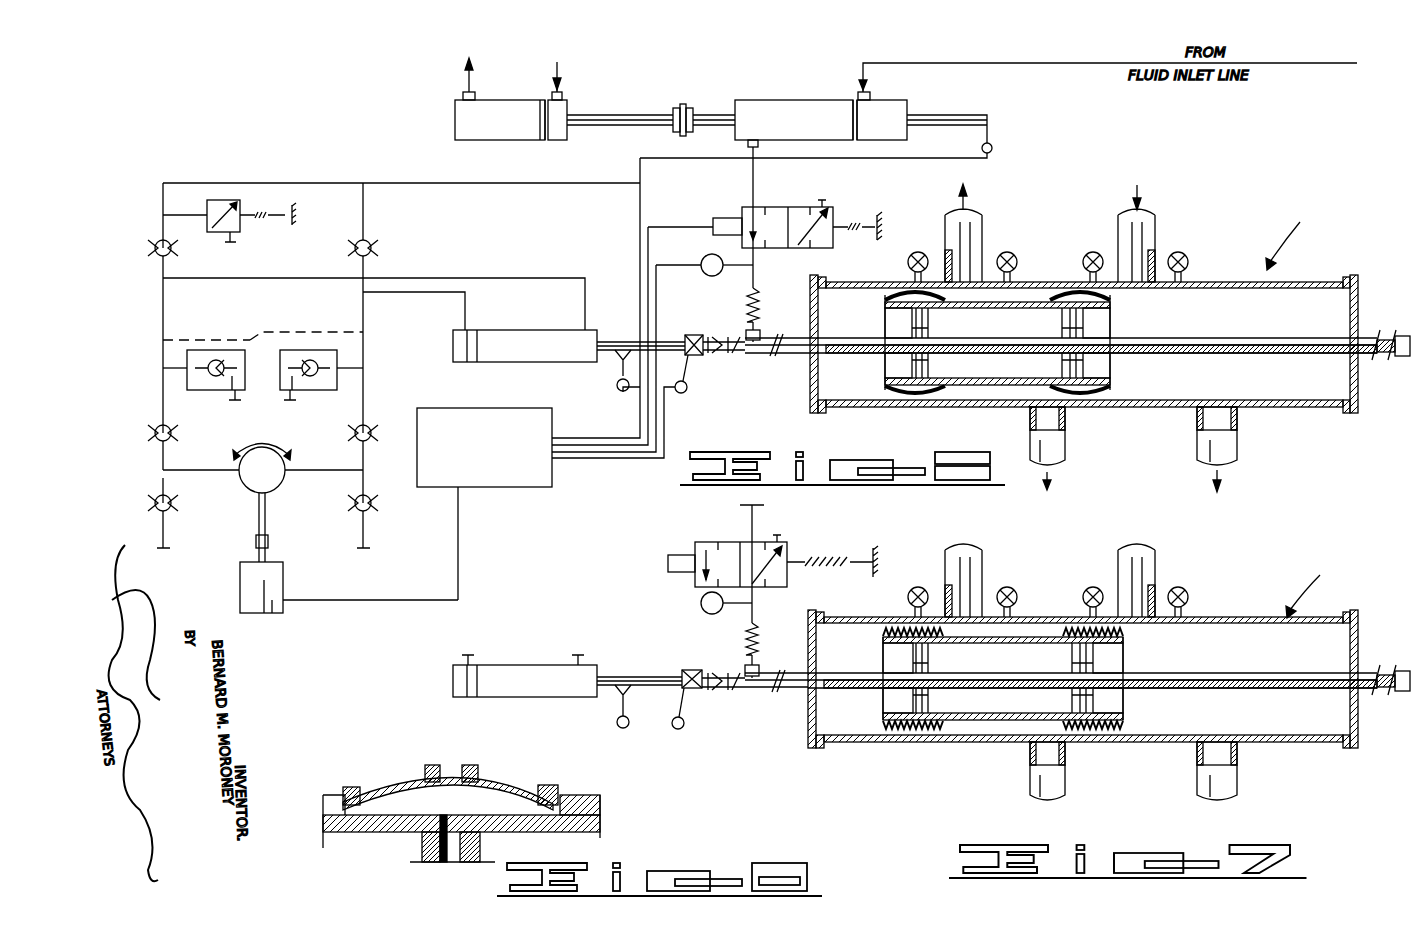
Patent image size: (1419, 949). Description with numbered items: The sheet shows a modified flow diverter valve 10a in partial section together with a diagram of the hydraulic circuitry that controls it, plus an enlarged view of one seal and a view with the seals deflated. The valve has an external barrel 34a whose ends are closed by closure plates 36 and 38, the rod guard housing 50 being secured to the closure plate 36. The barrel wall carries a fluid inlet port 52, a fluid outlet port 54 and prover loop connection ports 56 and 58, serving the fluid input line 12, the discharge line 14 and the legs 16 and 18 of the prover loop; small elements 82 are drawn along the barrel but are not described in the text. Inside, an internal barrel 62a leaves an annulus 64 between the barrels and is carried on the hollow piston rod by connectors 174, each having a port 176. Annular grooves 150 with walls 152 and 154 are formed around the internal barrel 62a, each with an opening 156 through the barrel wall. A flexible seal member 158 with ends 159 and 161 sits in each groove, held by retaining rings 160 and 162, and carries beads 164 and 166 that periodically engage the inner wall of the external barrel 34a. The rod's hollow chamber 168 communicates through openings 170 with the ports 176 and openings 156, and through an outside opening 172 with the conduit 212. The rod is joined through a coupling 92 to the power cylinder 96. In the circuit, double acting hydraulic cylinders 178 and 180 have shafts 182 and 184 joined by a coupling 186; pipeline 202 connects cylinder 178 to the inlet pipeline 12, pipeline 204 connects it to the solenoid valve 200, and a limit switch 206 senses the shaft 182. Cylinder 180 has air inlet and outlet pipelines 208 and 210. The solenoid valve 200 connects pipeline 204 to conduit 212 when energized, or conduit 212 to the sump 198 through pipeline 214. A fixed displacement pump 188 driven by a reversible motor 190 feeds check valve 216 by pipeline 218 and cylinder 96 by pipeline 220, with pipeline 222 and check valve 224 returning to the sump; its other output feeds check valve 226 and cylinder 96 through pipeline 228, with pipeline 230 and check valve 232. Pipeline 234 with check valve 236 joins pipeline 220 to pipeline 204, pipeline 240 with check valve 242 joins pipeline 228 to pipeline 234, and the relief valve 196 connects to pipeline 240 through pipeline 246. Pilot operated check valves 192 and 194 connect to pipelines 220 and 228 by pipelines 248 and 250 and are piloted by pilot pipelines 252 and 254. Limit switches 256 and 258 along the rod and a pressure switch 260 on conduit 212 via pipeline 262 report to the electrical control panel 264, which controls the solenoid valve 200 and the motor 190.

In FIG. 5, the modified diverter valve 10a is at (1299, 239).
In FIG. 7, the modified diverter valve 10a is at (1324, 587).
In FIG. 5, the fluid inlet pipeline 12 is at (1065, 448).
In FIG. 7, the fluid inlet pipeline 12 is at (1067, 782).
In FIG. 5, the fluid discharge line 14 is at (1237, 448).
In FIG. 7, the fluid discharge line 14 is at (1235, 782).
In FIG. 5, the prover loop leg 16 is at (982, 228).
In FIG. 7, the prover loop leg 16 is at (982, 576).
In FIG. 5, the prover loop leg 18 is at (1118, 232).
In FIG. 7, the prover loop leg 18 is at (1118, 580).
In FIG. 5, the modified external barrel 34a is at (1205, 282).
In FIG. 7, the modified external barrel 34a is at (1083, 663).
In FIG. 5, the closure plate 36 is at (1358, 385).
In FIG. 7, the closure plate 36 is at (1368, 679).
In FIG. 5, the closure plate 38 is at (810, 398).
In FIG. 7, the closure plate 38 is at (797, 681).
In FIG. 5, the rod guard housing 50 is at (1400, 336).
In FIG. 7, the rod guard housing 50 is at (1391, 663).
In FIG. 5, the fluid inlet port 52 is at (1065, 418).
In FIG. 7, the fluid inlet port 52 is at (1027, 753).
In FIG. 5, the fluid outlet port 54 is at (1237, 418).
In FIG. 7, the fluid outlet port 54 is at (1198, 753).
In FIG. 5, the prover loop connection port 56 is at (1155, 250).
In FIG. 7, the prover loop connection port 56 is at (1168, 586).
In FIG. 5, the prover loop connection port 58 is at (946, 250).
In FIG. 7, the prover loop connection port 58 is at (928, 589).
In FIG. 5, the modified internal barrel 62a is at (1013, 364).
In FIG. 6, the modified internal barrel 62a is at (593, 832).
In FIG. 5, the annulus 64 is at (1008, 407).
In FIG. 5, the valve 82 is at (907, 264).
In FIG. 7, the valve 82 is at (1042, 589).
In FIG. 5, the coupling 92 is at (690, 356).
In FIG. 7, the coupling 92 is at (694, 670).
In FIG. 5, the power cylinder 96 is at (525, 362).
In FIG. 7, the power cylinder 96 is at (548, 697).
In FIG. 5, the annular groove 150 is at (892, 325).
In FIG. 6, the annular groove 150 is at (482, 822).
In FIG. 6, the groove wall 152 is at (323, 802).
In FIG. 6, the groove wall 154 is at (600, 798).
In FIG. 6, the opening 156 is at (422, 850).
In FIG. 5, the seal member 158 is at (1105, 390).
In FIG. 7, the seal member 158 is at (1026, 677).
In FIG. 6, the seal member 158 is at (405, 775).
In FIG. 6, the seal member end 159 is at (323, 822).
In FIG. 6, the retaining ring 160 is at (348, 785).
In FIG. 6, the seal member end 161 is at (602, 815).
In FIG. 6, the retaining ring 162 is at (548, 785).
In FIG. 6, the annular bead 164 is at (433, 765).
In FIG. 6, the annular bead 166 is at (472, 765).
In FIG. 5, the hollow chamber 168 is at (800, 356).
In FIG. 7, the hollow chamber 168 is at (826, 688).
In FIG. 5, the opening 170 is at (920, 353).
In FIG. 7, the opening 170 is at (1007, 683).
In FIG. 5, the additional opening 172 is at (760, 334).
In FIG. 7, the additional opening 172 is at (757, 670).
In FIG. 5, the connector 174 is at (936, 353).
In FIG. 7, the connector 174 is at (1000, 678).
In FIG. 6, the connector 174 is at (415, 862).
In FIG. 5, the port 176 is at (924, 320).
In FIG. 7, the port 176 is at (1003, 675).
In FIG. 6, the port 176 is at (445, 862).
In FIG. 5, the double acting hydraulic cylinder 178 is at (795, 100).
In FIG. 5, the double acting hydraulic cylinder 180 is at (520, 100).
In FIG. 5, the shaft 182 is at (714, 112).
In FIG. 5, the shaft 184 is at (620, 113).
In FIG. 5, the coupling 186 is at (677, 106).
In FIG. 5, the fixed displacement pump 188 is at (272, 486).
In FIG. 5, the reversible motor 190 is at (280, 576).
In FIG. 5, the pilot operated check valve 192 is at (302, 390).
In FIG. 5, the pilot operated check valve 194 is at (208, 390).
In FIG. 5, the relief valve 196 is at (240, 200).
In FIG. 5, the sump 198 is at (240, 242).
In FIG. 7, the sump 198 is at (778, 535).
In FIG. 5, the solenoid valve 200 is at (792, 197).
In FIG. 7, the solenoid valve 200 is at (720, 542).
In FIG. 5, the pipeline 202 is at (985, 64).
In FIG. 5, the pipeline 204 is at (750, 172).
In FIG. 7, the pipeline 204 is at (748, 505).
In FIG. 5, the limit switch 206 is at (993, 150).
In FIG. 5, the air inlet pipeline 208 is at (557, 62).
In FIG. 5, the air outlet pipeline 210 is at (465, 80).
In FIG. 5, the partially flexible conduit 212 is at (756, 290).
In FIG. 7, the partially flexible conduit 212 is at (755, 617).
In FIG. 5, the pipeline 214 is at (826, 207).
In FIG. 7, the pipeline 214 is at (776, 542).
In FIG. 5, the check valve 216 is at (372, 440).
In FIG. 5, the pipeline 218 is at (340, 470).
In FIG. 5, the pipeline 220 is at (403, 292).
In FIG. 5, the pipeline 222 is at (363, 526).
In FIG. 5, the check valve 224 is at (372, 508).
In FIG. 5, the check valve 226 is at (152, 438).
In FIG. 5, the pipeline 228 is at (250, 279).
In FIG. 5, the pipeline 230 is at (160, 474).
In FIG. 5, the check valve 232 is at (152, 500).
In FIG. 5, the pipeline 234 is at (366, 208).
In FIG. 5, the check valve 236 is at (372, 252).
In FIG. 5, the pipeline 240 is at (190, 183).
In FIG. 5, the check valve 242 is at (155, 254).
In FIG. 5, the pipeline 246 is at (198, 203).
In FIG. 5, the pipeline 248 is at (366, 370).
In FIG. 5, the pipeline 250 is at (165, 356).
In FIG. 5, the pilot pipeline 252 is at (218, 335).
In FIG. 5, the pilot pipeline 254 is at (328, 332).
In FIG. 5, the limit switch 256 is at (617, 389).
In FIG. 7, the limit switch 256 is at (628, 726).
In FIG. 5, the limit switch 258 is at (686, 389).
In FIG. 7, the limit switch 258 is at (685, 730).
In FIG. 5, the pressure switch 260 is at (708, 276).
In FIG. 7, the pressure switch 260 is at (700, 602).
In FIG. 5, the connecting pipeline 262 is at (753, 262).
In FIG. 7, the connecting pipeline 262 is at (735, 606).
In FIG. 5, the electrical control panel 264 is at (488, 485).